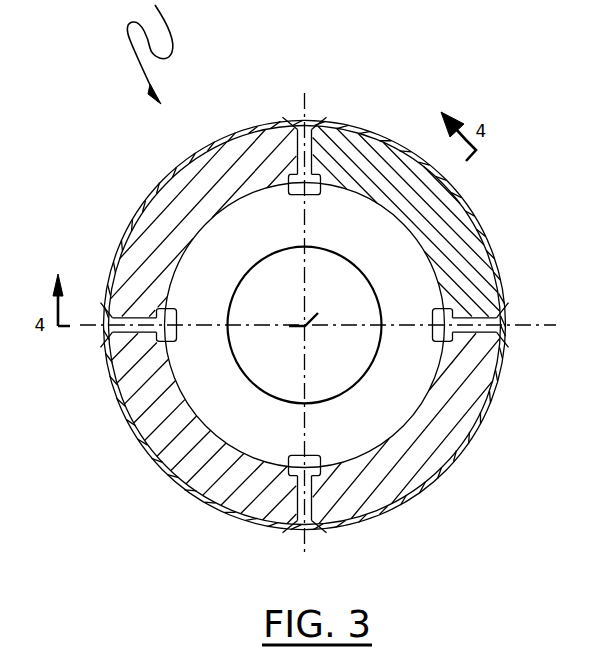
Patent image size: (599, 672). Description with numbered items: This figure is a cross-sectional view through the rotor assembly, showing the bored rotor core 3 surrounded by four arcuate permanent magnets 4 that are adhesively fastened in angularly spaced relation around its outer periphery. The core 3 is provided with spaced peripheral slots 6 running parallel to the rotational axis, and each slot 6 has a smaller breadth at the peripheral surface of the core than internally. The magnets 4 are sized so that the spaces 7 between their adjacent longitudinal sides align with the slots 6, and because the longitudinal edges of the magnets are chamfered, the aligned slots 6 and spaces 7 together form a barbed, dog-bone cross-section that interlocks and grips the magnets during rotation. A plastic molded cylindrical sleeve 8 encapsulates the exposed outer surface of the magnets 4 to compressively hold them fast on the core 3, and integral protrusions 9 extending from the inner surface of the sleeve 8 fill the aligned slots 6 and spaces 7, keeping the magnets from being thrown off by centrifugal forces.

The rotor core 3 is at (381, 394).
The arcuate permanent magnets 4 is at (171, 214).
The peripheral slots 6 is at (318, 196).
The spaces 7 is at (278, 121).
The cylindrical sleeve 8 is at (122, 222).
The protrusions 9 is at (339, 121).